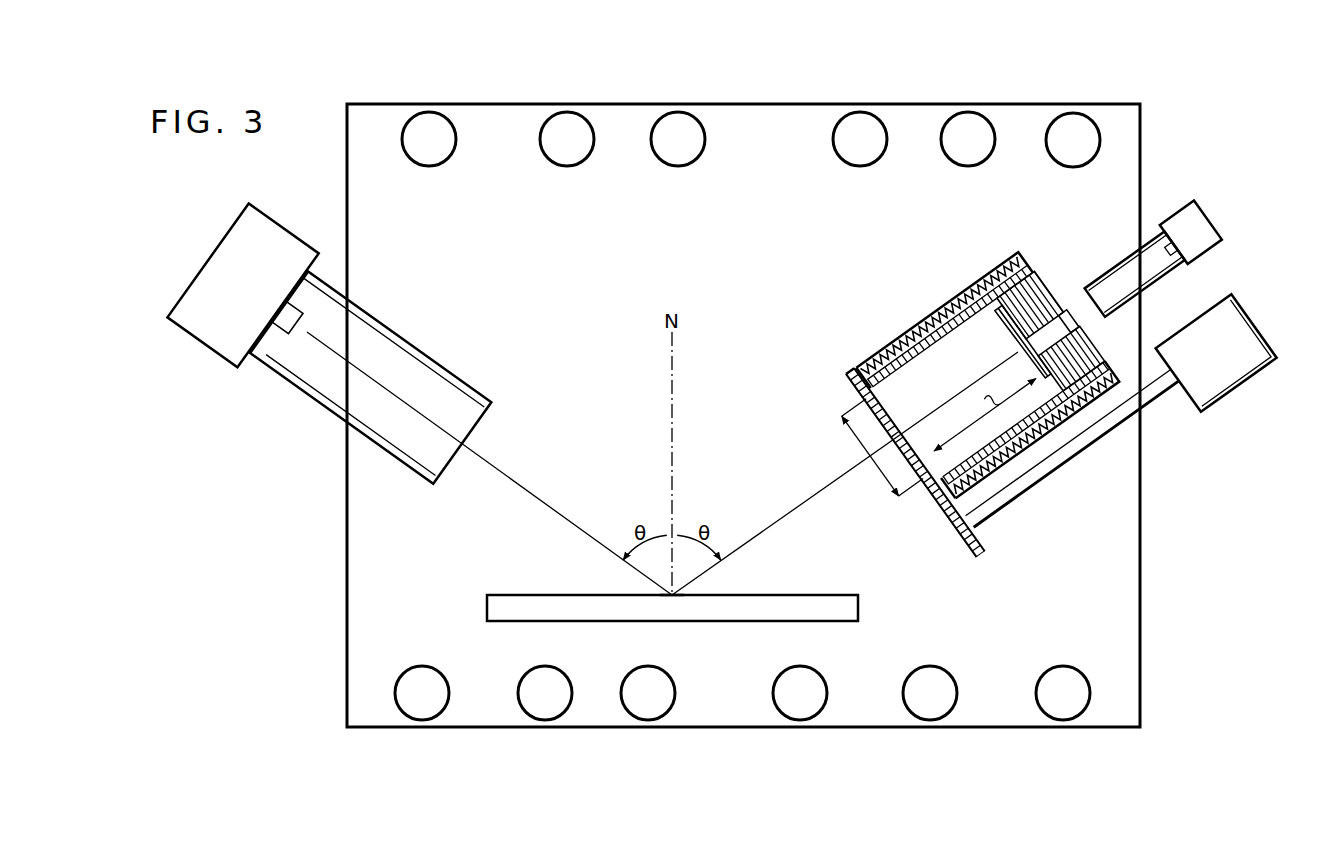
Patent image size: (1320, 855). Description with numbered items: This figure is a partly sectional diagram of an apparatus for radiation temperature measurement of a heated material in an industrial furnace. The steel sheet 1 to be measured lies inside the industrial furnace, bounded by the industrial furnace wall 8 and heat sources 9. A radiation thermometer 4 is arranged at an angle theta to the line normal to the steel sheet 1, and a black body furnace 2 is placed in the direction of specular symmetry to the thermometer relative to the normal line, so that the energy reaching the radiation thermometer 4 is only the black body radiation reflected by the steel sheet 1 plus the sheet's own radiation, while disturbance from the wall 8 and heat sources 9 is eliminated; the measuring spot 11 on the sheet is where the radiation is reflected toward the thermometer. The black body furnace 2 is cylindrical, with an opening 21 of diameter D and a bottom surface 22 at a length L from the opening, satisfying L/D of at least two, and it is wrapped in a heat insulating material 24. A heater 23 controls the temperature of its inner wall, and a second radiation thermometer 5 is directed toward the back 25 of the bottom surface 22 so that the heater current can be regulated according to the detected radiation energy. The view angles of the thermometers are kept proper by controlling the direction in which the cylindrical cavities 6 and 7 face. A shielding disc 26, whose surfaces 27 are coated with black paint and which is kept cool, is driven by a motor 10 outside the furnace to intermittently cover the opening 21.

The steel sheet 1 is at (727, 605).
The black body furnace 2 is at (1033, 297).
The radiation thermometer 4 is at (192, 340).
The radiation thermometer 5 is at (1186, 213).
The cylindrical cavity 6 is at (397, 337).
The cylindrical cavity 7 is at (1127, 250).
The industrial furnace wall 8 is at (806, 107).
The heat source 9 is at (447, 158).
The motor 10 is at (1196, 393).
The measuring spot 11 is at (683, 595).
The opening 21 is at (886, 388).
The bottom surface 22 is at (1012, 323).
The heater 23 is at (1014, 257).
The heat insulating material 24 is at (847, 370).
The back of the bottom surface 25 is at (1067, 312).
The shielding disc 26 is at (953, 503).
The surfaces 27 is at (905, 470).